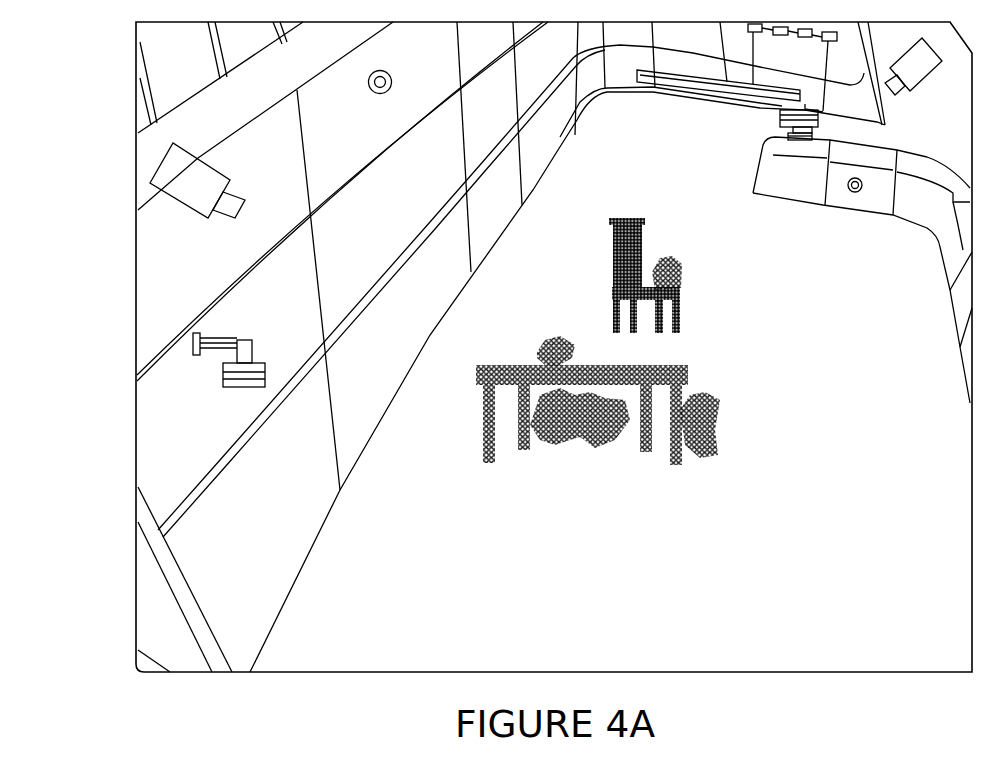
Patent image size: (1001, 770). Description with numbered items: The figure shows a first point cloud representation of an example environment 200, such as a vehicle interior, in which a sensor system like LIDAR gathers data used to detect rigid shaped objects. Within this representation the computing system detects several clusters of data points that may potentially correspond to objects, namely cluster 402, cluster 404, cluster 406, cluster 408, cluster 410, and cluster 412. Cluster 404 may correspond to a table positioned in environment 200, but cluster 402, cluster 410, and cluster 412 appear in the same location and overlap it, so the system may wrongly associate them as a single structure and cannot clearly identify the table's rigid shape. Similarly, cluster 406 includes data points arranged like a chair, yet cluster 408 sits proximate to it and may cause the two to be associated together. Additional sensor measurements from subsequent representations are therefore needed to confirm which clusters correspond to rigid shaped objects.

The environment 200 is at (120, 94).
The cluster 402 is at (563, 437).
The cluster 404 is at (508, 362).
The cluster 406 is at (608, 238).
The cluster 408 is at (682, 266).
The cluster 410 is at (553, 332).
The cluster 412 is at (717, 437).